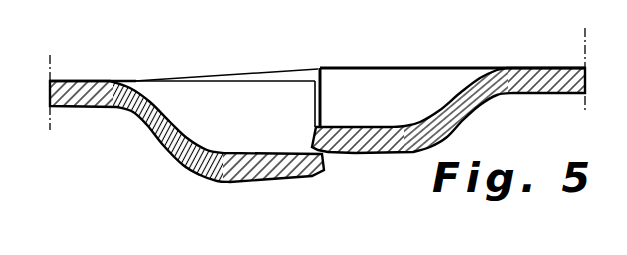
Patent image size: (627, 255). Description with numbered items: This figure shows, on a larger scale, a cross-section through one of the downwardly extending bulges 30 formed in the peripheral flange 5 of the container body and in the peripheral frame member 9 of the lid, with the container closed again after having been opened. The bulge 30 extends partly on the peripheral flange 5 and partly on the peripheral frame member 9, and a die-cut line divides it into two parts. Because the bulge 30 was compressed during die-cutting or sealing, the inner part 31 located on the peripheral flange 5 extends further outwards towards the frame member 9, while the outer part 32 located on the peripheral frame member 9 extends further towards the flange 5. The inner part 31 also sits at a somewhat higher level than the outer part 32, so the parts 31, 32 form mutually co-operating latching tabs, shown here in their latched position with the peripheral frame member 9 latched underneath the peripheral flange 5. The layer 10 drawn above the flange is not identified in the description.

The peripheral flange 5 is at (317, 111).
The peripheral frame member 9 is at (107, 80).
The thin layer 10 is at (280, 68).
The bulge 30 is at (406, 36).
The first part of the bulge 31 is at (413, 148).
The outer part of the bulge 32 is at (192, 168).